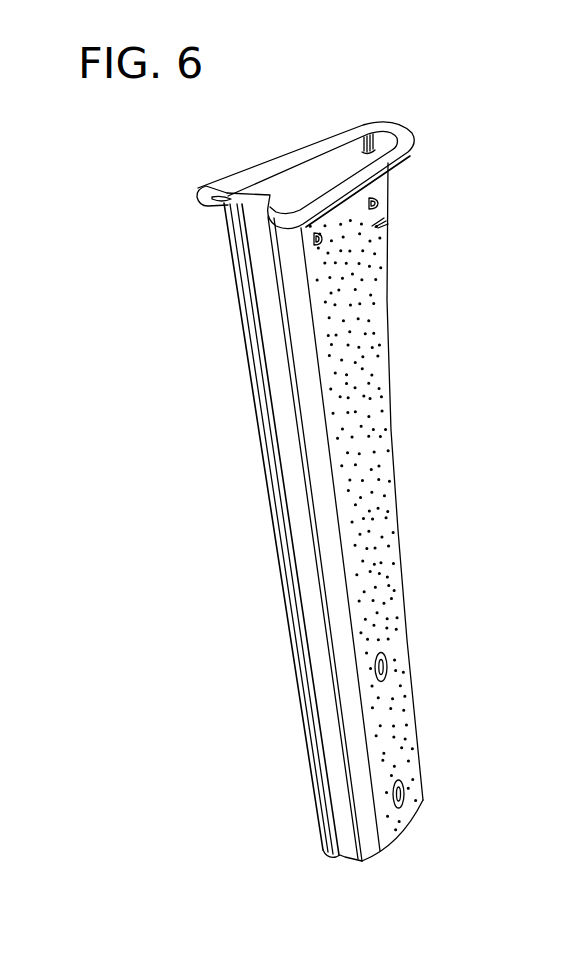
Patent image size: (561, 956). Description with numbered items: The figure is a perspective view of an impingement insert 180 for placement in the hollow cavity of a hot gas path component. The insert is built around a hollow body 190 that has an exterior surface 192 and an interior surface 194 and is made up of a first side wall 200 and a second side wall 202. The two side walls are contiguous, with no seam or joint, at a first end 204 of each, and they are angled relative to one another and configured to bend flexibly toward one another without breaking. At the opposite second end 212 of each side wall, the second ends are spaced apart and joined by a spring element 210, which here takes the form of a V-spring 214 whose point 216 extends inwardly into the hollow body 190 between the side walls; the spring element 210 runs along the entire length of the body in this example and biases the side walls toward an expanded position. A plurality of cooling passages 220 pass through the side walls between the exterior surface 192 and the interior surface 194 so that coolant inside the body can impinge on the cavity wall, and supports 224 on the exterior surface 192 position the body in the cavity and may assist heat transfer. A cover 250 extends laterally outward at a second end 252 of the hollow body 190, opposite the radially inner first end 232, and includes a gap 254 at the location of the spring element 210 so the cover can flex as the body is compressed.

The impingement insert 180 is at (400, 117).
The hollow body 190 is at (372, 225).
The exterior surface 192 is at (357, 239).
The interior surface 194 is at (307, 178).
The first side wall 200 is at (400, 178).
The second side wall 202 is at (338, 160).
The first end 204 is at (366, 130).
The spring element 210 is at (250, 282).
The second end 212 is at (226, 193).
The V-spring 214 is at (258, 231).
The point 216 is at (268, 192).
The cooling passages 220 is at (377, 477).
The supports 224 is at (378, 201).
The first end 232 is at (394, 840).
The cover 250 is at (411, 131).
The second end 252 is at (330, 241).
The gap 254 is at (250, 215).